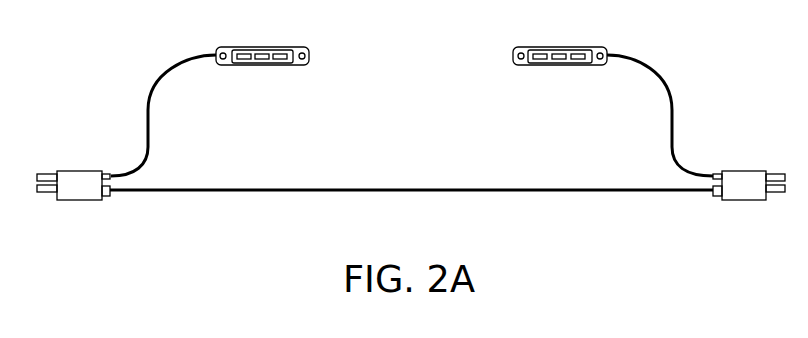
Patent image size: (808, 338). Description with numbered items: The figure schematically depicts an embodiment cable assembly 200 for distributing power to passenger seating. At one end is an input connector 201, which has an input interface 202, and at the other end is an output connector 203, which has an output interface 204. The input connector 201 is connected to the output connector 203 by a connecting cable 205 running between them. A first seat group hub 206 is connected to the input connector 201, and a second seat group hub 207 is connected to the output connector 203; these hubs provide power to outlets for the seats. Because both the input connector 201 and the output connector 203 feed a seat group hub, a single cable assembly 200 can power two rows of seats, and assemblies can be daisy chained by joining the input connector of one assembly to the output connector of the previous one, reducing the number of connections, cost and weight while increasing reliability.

The cable assembly 200 is at (417, 64).
The input connector 201 is at (76, 202).
The input interface 202 is at (50, 172).
The output connector 203 is at (748, 202).
The output interface 204 is at (774, 172).
The connecting cable 205 is at (200, 195).
The first seat group hub 206 is at (258, 66).
The second seat group hub 207 is at (562, 66).